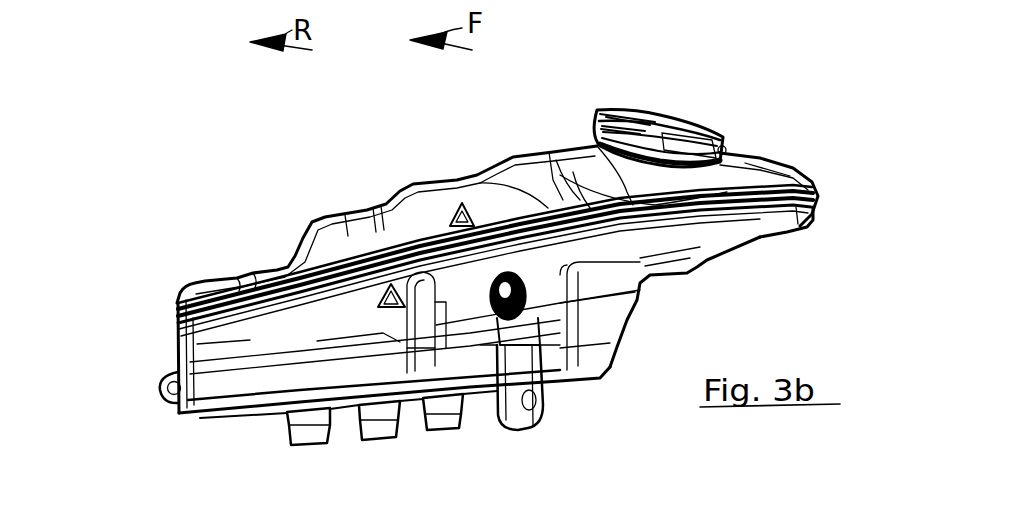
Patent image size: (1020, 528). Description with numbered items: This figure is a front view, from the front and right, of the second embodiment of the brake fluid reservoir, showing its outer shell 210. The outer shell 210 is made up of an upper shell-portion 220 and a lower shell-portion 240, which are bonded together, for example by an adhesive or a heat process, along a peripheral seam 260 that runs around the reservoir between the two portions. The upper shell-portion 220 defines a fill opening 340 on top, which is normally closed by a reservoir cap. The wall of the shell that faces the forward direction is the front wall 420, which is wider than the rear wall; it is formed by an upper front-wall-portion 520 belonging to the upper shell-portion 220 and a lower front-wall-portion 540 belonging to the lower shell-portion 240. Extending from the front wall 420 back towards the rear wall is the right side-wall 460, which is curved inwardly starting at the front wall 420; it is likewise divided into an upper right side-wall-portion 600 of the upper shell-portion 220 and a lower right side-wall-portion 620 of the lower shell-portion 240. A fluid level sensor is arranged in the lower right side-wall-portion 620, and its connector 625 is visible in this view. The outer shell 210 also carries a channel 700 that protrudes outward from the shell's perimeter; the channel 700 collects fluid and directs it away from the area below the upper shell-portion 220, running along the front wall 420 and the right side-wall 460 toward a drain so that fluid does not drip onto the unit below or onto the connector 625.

The outer shell 210 is at (486, 162).
The upper shell-portion 220 is at (344, 235).
The lower shell-portion 240 is at (178, 348).
The peripheral seam 260 is at (818, 198).
The fill opening 340 is at (636, 106).
The front wall 420 is at (812, 218).
The right side-wall 460 is at (371, 236).
The upper front-wall-portion 520 is at (795, 172).
The lower front-wall-portion 540 is at (795, 212).
The upper right side-wall-portion 600 is at (533, 210).
The lower right side-wall-portion 620 is at (310, 344).
The connector 625 is at (612, 286).
The channel 700 is at (550, 200).